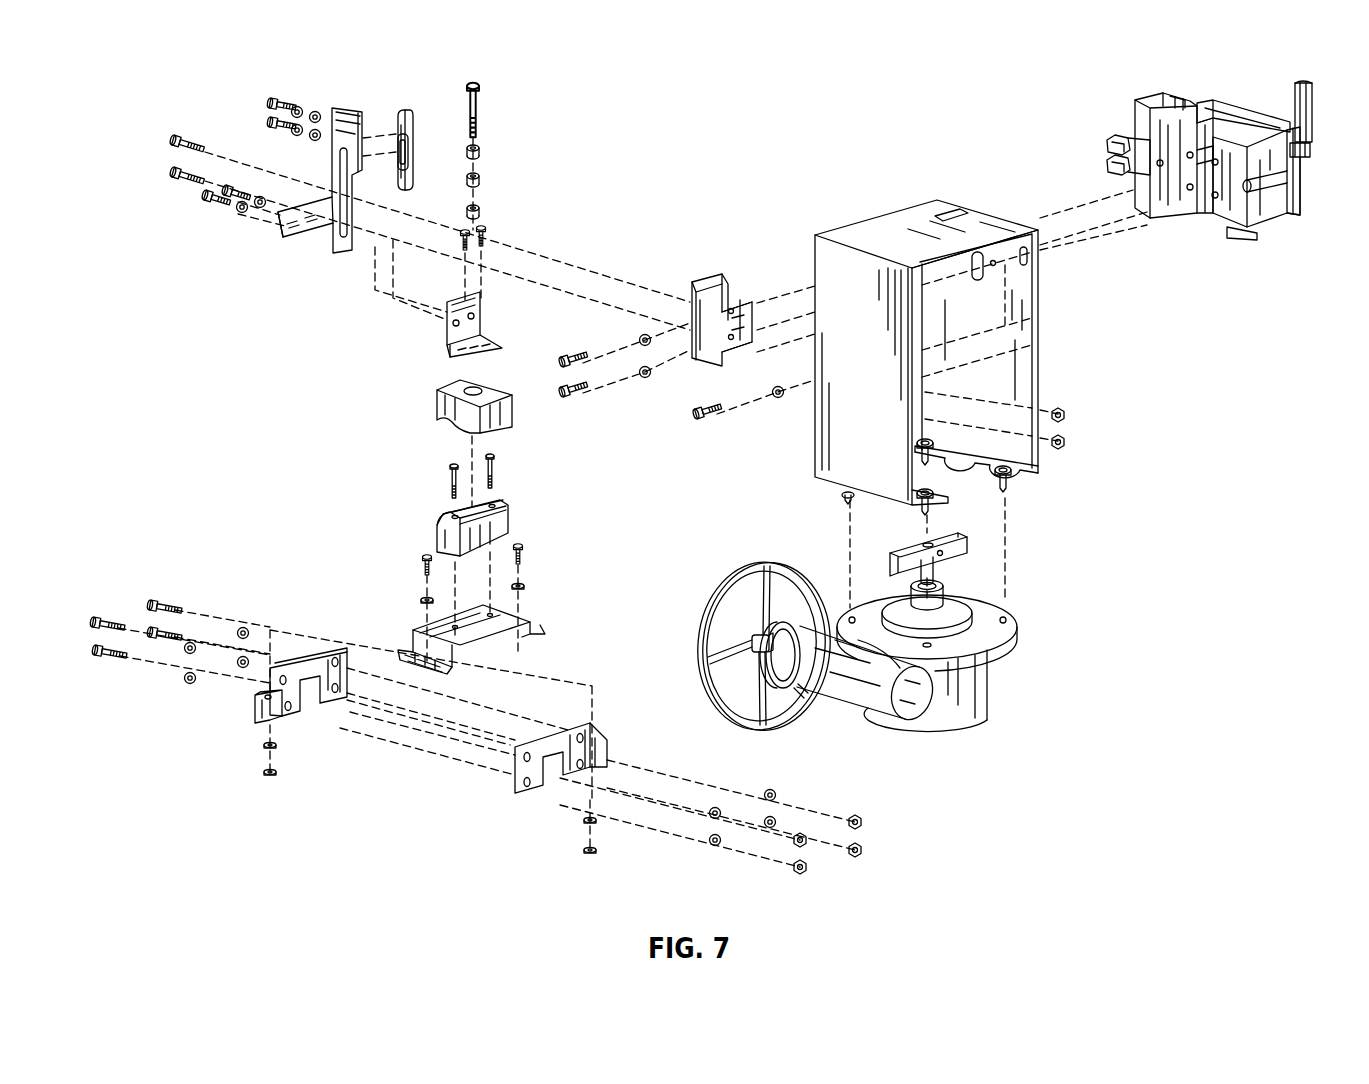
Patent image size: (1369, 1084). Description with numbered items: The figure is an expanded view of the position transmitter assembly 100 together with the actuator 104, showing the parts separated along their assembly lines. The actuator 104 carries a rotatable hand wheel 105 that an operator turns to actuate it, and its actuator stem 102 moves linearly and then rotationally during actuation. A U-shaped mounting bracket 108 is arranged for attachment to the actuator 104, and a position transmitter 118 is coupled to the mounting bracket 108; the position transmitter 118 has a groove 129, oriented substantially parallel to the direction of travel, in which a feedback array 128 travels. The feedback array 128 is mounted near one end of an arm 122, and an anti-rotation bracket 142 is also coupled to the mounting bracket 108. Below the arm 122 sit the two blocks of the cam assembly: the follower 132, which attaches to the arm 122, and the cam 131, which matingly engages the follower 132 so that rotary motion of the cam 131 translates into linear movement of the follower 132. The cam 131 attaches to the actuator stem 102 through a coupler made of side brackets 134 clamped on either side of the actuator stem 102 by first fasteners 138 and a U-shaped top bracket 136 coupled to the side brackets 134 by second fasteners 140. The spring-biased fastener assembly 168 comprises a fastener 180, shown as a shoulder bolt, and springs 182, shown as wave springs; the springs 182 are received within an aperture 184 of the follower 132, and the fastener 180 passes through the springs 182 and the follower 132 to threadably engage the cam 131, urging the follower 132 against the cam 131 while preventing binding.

The position transmitter assembly 100 is at (632, 191).
The actuator stem 102 is at (960, 588).
The actuator 104 is at (975, 712).
The hand wheel 105 is at (768, 573).
The mounting bracket 108 is at (1038, 368).
The position transmitter 118 is at (1162, 140).
The arm 122 is at (345, 107).
The feedback array 128 is at (405, 112).
The groove 129 is at (1218, 125).
The cam 131 is at (510, 530).
The follower 132 is at (440, 402).
The side brackets 134 is at (285, 730).
The top bracket 136 is at (548, 628).
The first fasteners 138 is at (97, 655).
The second fasteners 140 is at (422, 566).
The anti-rotation bracket 142 is at (720, 285).
The spring-biased fastener assembly 168 is at (542, 128).
The fastener 180 is at (478, 104).
The springs 182 is at (478, 152).
The aperture 184 is at (455, 387).